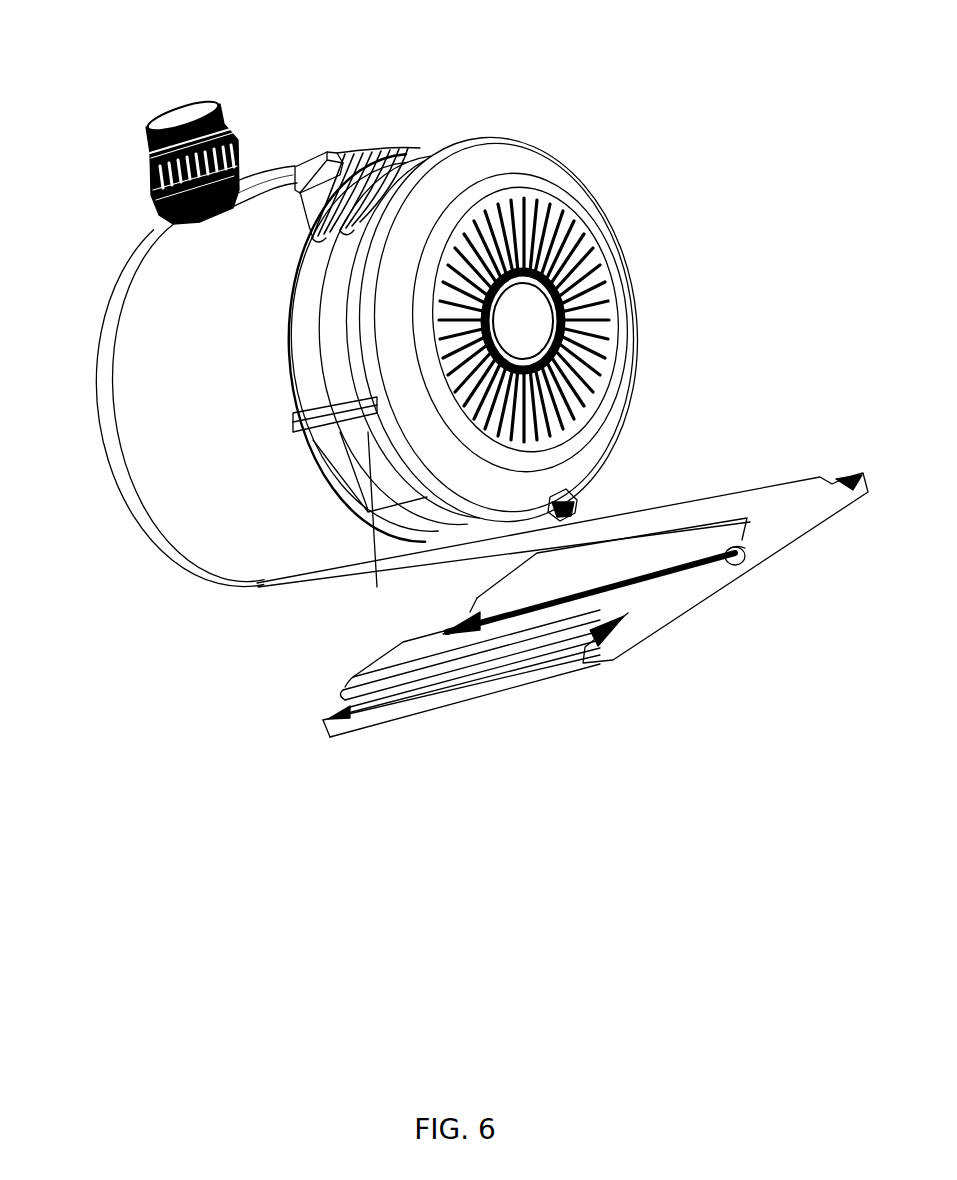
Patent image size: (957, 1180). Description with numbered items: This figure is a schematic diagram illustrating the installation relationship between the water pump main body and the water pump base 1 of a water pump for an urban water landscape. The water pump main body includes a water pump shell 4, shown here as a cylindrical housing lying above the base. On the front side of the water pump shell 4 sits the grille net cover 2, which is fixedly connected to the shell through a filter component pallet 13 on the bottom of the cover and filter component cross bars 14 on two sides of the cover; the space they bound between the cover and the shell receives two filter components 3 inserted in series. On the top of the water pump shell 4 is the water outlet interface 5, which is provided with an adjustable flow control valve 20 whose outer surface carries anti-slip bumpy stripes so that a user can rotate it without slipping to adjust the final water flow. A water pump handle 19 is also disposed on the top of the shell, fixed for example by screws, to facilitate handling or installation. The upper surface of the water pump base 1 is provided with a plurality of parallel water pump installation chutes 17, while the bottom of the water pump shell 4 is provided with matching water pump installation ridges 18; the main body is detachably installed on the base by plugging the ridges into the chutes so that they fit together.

The water pump base 1 is at (802, 515).
The grille net cover 2 is at (521, 158).
The filter component 3 is at (303, 345).
The water pump shell 4 is at (183, 467).
The water outlet interface 5 is at (178, 116).
The filter component pallet 13 is at (430, 522).
The filter component cross bars 14 is at (352, 380).
The water pump installation chutes 17 is at (725, 570).
The water pump installation ridges 18 is at (508, 525).
The water pump handle 19 is at (292, 167).
The flow control valve 20 is at (145, 175).